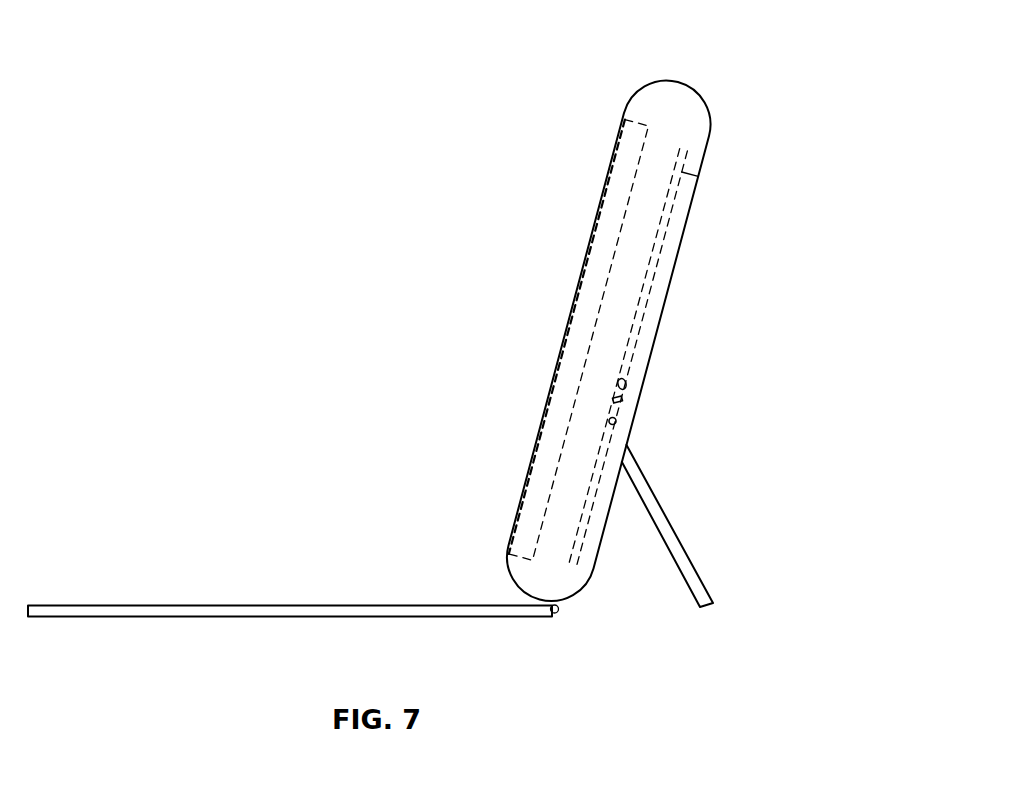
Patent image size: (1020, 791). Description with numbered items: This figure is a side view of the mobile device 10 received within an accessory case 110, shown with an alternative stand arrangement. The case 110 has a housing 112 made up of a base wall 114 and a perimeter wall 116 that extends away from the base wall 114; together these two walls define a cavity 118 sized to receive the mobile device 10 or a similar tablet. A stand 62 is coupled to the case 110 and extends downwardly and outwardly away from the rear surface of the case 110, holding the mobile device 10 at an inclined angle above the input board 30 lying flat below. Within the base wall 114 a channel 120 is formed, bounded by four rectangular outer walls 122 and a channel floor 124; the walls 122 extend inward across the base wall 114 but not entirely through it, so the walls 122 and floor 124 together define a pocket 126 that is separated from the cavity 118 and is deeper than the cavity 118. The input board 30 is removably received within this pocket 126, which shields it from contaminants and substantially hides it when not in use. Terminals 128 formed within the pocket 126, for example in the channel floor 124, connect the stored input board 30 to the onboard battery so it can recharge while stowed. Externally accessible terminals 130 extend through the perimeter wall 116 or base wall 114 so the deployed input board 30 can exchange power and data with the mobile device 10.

The mobile device 10 is at (658, 321).
The input board 30 is at (163, 575).
The stand 62 is at (673, 521).
The case 110 is at (677, 78).
The housing 112 is at (647, 112).
The base wall 114 is at (675, 263).
The perimeter wall 116 is at (663, 143).
The cavity 118 is at (600, 256).
The channel 120 is at (688, 163).
The rectangular outer walls 122 is at (588, 540).
The channel floor 124 is at (645, 312).
The pocket 126 is at (677, 215).
The terminals 128 is at (618, 421).
The externally accessible terminals 130 is at (555, 613).